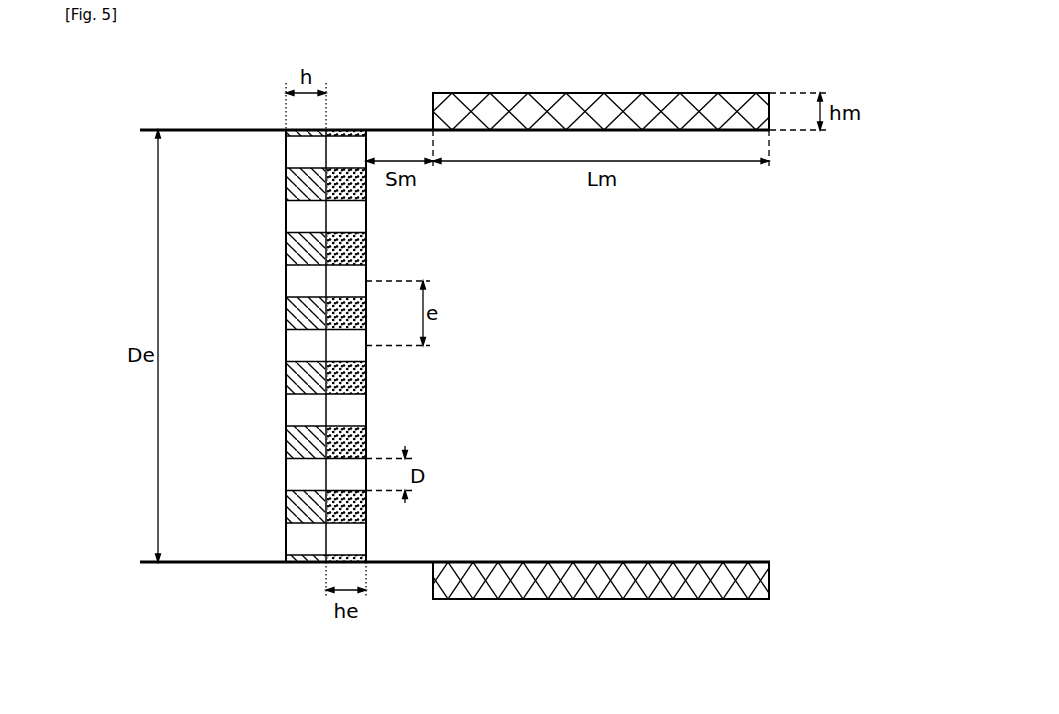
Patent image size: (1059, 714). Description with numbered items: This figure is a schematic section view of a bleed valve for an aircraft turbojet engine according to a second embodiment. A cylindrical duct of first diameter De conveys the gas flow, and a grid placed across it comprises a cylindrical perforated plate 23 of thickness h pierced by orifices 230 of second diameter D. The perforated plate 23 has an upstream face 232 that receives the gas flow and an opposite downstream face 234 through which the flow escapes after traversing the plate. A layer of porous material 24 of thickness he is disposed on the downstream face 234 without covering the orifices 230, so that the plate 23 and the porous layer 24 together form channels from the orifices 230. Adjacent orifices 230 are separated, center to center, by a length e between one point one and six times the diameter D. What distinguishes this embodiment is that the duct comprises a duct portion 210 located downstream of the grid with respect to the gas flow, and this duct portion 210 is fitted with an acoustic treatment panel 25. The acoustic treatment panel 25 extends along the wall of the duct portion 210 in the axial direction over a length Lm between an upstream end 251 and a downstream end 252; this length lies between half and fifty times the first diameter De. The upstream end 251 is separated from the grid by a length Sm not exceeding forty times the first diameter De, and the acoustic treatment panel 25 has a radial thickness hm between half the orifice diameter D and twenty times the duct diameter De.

The perforated plate 23 is at (291, 184).
The layer of porous material 24 is at (350, 250).
The orifices 230 is at (300, 345).
The upstream face 232 is at (286, 505).
The downstream face 234 is at (404, 346).
The duct portion 210 is at (657, 560).
The acoustic treatment panel 25 is at (762, 580).
The upstream end 251 is at (433, 580).
The downstream end 252 is at (770, 596).